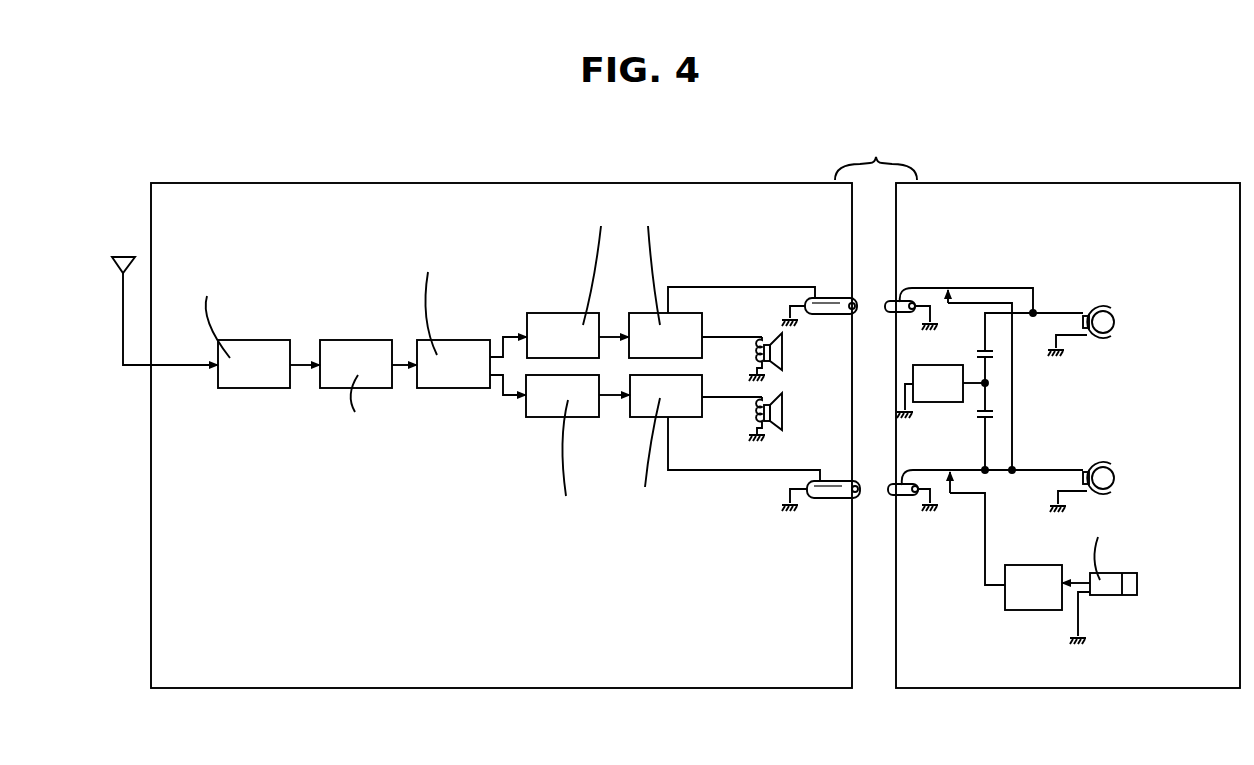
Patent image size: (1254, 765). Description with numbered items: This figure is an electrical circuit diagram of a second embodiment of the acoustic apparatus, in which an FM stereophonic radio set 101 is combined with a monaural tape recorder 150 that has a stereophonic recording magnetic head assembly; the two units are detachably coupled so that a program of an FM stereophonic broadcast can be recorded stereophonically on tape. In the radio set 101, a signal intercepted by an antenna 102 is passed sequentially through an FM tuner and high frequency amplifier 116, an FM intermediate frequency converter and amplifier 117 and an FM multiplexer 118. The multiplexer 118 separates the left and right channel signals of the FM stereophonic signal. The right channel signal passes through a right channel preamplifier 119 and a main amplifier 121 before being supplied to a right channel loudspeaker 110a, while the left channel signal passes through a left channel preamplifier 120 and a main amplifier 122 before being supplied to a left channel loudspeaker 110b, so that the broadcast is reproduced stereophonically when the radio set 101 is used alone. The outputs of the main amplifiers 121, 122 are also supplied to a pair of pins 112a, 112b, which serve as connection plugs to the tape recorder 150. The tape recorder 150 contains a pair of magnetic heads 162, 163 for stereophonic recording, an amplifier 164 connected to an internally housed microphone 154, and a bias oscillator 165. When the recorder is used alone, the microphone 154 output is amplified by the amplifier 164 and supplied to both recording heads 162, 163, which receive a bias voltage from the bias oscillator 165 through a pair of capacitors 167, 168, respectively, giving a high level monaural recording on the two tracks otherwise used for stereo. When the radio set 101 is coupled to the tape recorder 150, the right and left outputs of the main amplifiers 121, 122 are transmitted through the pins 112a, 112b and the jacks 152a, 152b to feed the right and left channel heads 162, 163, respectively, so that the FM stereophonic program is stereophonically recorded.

The FM stereophonic radio set 101 is at (395, 185).
The monaural tape recorder 150 is at (1065, 185).
The antenna 102 is at (124, 345).
The FM tuner and high frequency amplifier 116 is at (253, 346).
The FM intermediate frequency converter and amplifier 117 is at (370, 346).
The FM multiplexer 118 is at (462, 346).
The right channel preamplifier 119 is at (553, 321).
The left channel preamplifier 120 is at (557, 413).
The right channel main amplifier 121 is at (640, 318).
The left channel main amplifier 122 is at (648, 413).
The right channel loudspeaker 110a is at (782, 355).
The left channel loudspeaker 110b is at (782, 415).
The pin 112a is at (830, 297).
The pin 112b is at (830, 505).
The jack 152a is at (895, 300).
The jack 152b is at (890, 497).
The right channel recording head 162 is at (1108, 310).
The left channel recording head 163 is at (1108, 465).
The amplifier 164 is at (1035, 606).
The bias oscillator 165 is at (940, 403).
The capacitor 167 is at (975, 355).
The capacitor 168 is at (975, 416).
The internally housed microphone 154 is at (1115, 596).